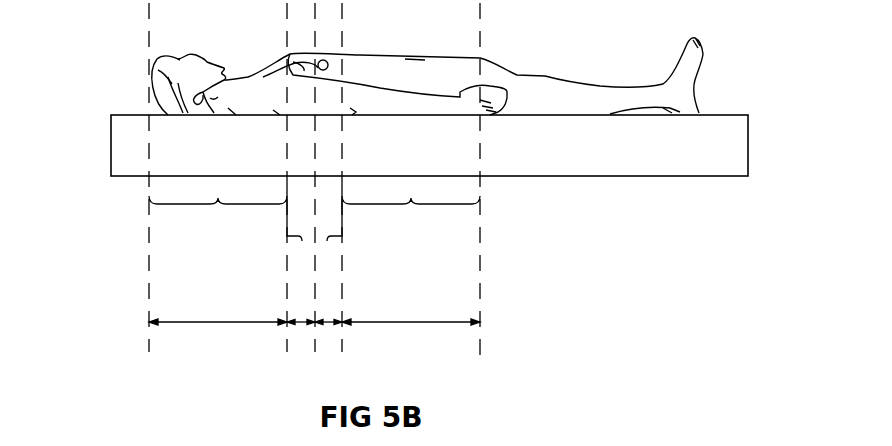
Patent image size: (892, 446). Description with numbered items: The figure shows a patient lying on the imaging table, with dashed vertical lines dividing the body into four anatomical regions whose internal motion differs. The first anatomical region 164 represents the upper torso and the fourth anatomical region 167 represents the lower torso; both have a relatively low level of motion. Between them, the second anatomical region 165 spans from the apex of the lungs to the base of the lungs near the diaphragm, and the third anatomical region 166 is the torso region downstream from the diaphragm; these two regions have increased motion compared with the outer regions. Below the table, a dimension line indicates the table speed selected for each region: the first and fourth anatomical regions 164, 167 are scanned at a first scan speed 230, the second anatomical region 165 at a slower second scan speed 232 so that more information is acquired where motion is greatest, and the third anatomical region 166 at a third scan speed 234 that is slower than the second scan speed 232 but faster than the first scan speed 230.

The first anatomical region 164 is at (218, 177).
The second anatomical region 165 is at (302, 241).
The third anatomical region 166 is at (327, 241).
The fourth anatomical region 167 is at (411, 182).
The first scan speed 230 is at (212, 322).
The second scan speed 232 is at (302, 322).
The third scan speed 234 is at (333, 322).